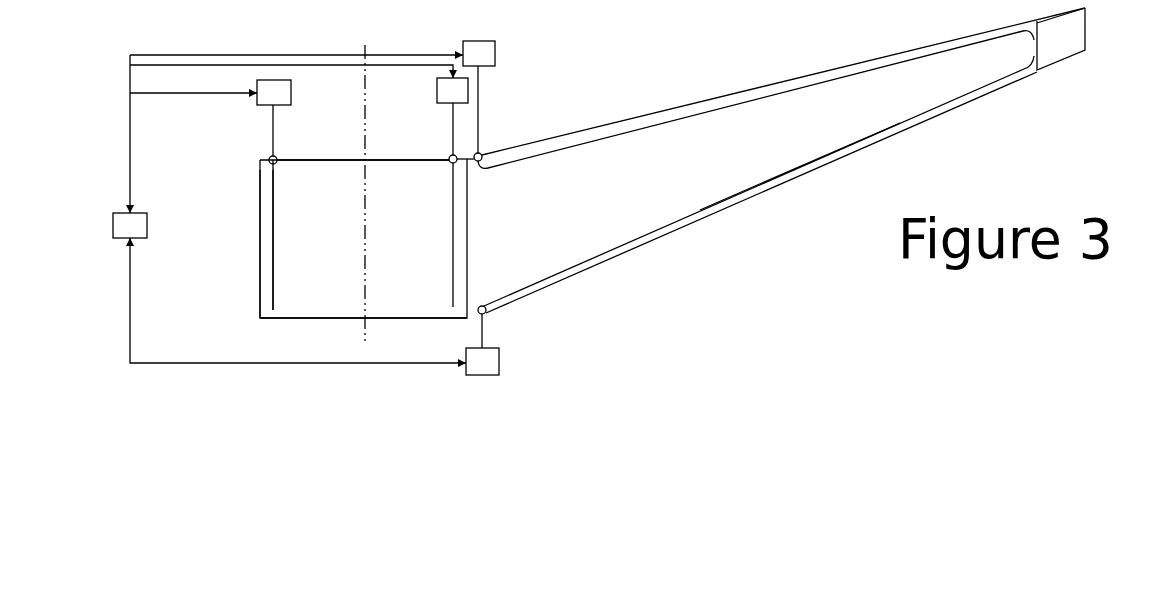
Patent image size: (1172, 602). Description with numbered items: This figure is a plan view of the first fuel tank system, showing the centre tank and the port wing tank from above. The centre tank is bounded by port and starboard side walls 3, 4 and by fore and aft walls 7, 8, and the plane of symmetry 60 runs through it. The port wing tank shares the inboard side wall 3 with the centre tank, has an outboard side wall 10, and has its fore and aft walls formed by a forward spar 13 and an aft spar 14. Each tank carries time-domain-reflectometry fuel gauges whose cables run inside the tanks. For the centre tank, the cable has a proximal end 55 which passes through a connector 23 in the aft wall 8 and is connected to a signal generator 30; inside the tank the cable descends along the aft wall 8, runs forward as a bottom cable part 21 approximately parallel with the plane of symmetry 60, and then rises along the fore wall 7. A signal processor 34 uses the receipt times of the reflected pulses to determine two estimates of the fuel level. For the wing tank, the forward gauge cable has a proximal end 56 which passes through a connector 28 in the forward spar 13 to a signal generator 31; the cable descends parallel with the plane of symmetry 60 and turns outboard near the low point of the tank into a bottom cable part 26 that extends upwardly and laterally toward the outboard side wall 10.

The port side wall 3 is at (470, 200).
The starboard side wall 4 is at (260, 240).
The fore wall 7 is at (335, 320).
The aft wall 8 is at (413, 158).
The outboard side wall 10 is at (1038, 48).
The forward spar 13 is at (707, 215).
The aft spar 14 is at (700, 102).
The bottom cable part 21 is at (273, 270).
The connector 23 is at (276, 157).
The bottom cable part 26 is at (780, 175).
The connector 28 is at (488, 312).
The signal generator 30 is at (292, 92).
The signal generator 31 is at (499, 360).
The signal processor 34 is at (148, 225).
The proximal end 55 is at (272, 138).
The proximal end 56 is at (480, 332).
The plane of symmetry 60 is at (367, 203).